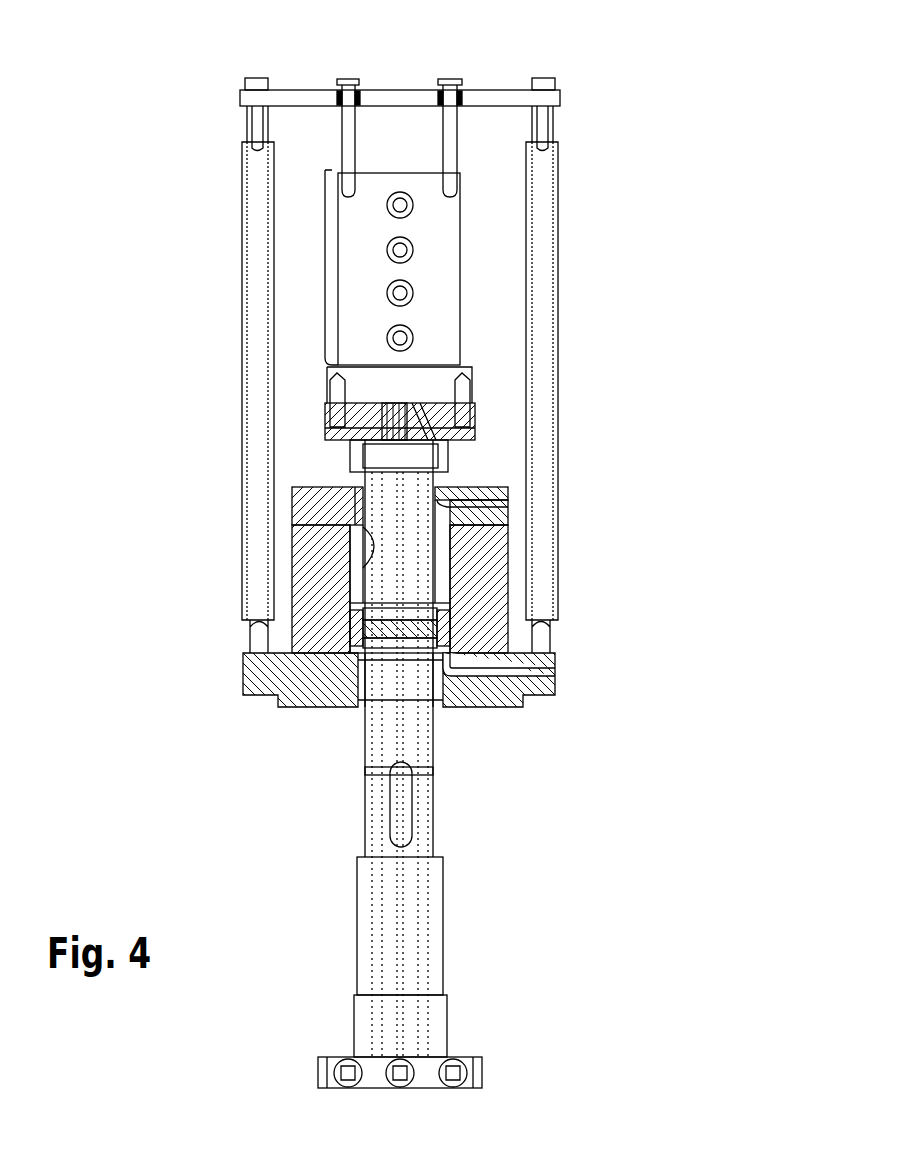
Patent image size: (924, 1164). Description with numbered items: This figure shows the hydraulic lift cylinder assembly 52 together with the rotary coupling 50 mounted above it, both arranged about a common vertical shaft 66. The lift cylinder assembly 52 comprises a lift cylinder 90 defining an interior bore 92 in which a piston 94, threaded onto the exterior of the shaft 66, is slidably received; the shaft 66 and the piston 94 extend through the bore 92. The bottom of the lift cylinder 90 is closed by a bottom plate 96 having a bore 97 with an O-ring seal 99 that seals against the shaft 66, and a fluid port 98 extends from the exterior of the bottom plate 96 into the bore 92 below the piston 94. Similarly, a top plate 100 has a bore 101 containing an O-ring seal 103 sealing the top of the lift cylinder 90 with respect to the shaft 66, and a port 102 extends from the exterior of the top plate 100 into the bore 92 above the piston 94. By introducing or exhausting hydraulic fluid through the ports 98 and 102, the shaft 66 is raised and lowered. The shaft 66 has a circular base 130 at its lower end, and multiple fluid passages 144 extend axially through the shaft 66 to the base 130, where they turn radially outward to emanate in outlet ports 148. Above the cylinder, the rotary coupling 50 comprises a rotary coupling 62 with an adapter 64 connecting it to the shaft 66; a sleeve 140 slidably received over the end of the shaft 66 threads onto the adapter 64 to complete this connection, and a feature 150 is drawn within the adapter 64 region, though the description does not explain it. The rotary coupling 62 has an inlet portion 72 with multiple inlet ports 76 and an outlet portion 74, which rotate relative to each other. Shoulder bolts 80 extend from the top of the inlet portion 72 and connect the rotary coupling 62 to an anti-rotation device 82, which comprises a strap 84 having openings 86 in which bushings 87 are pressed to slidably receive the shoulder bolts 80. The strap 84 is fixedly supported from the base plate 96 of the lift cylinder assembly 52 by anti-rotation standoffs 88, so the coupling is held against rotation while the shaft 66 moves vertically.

The rotary coupling 50 is at (558, 262).
The lift cylinder assembly 52 is at (290, 560).
The rotary coupling 62 is at (462, 215).
The adapter 64 is at (478, 430).
The shaft 66 is at (446, 890).
The inlet portion 72 is at (325, 360).
The outlet portion 74 is at (326, 403).
The inlet ports 76 is at (475, 290).
The shoulder bolts 80 is at (458, 145).
The anti-rotation device 82 is at (243, 218).
The strap 84 is at (394, 90).
The openings 86 is at (443, 90).
The bushings 87 is at (460, 92).
The anti-rotation standoffs 88 is at (250, 362).
The lift cylinder 90 is at (295, 600).
The interior bore 92 is at (345, 522).
The piston 94 is at (455, 612).
The bottom plate 96 is at (292, 705).
The bore 97 is at (440, 665).
The fluid port 98 is at (548, 677).
The O-ring seal 99 is at (358, 665).
The top plate 100 is at (510, 520).
The bore 101 is at (450, 495).
The port 102 is at (508, 502).
The O-ring seal 103 is at (363, 523).
The circular base 130 is at (482, 1063).
The sleeve 140 is at (350, 455).
The fluid passages 144 is at (372, 973).
The outlet ports 148 is at (453, 1088).
The slot 150 is at (415, 415).